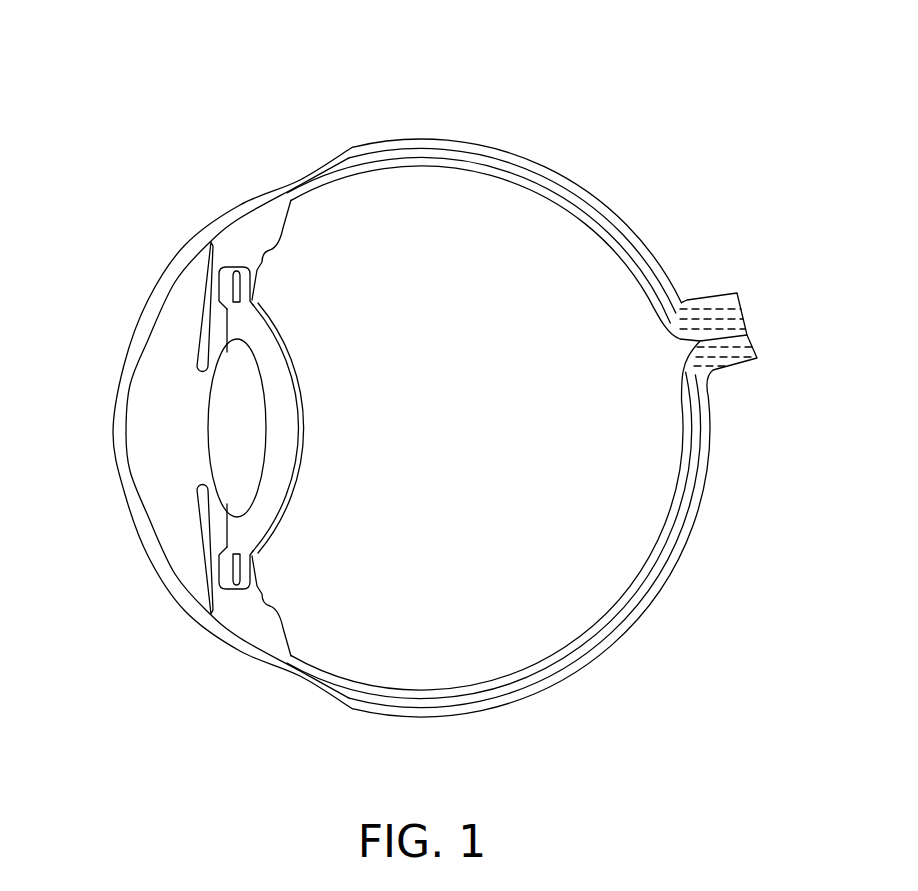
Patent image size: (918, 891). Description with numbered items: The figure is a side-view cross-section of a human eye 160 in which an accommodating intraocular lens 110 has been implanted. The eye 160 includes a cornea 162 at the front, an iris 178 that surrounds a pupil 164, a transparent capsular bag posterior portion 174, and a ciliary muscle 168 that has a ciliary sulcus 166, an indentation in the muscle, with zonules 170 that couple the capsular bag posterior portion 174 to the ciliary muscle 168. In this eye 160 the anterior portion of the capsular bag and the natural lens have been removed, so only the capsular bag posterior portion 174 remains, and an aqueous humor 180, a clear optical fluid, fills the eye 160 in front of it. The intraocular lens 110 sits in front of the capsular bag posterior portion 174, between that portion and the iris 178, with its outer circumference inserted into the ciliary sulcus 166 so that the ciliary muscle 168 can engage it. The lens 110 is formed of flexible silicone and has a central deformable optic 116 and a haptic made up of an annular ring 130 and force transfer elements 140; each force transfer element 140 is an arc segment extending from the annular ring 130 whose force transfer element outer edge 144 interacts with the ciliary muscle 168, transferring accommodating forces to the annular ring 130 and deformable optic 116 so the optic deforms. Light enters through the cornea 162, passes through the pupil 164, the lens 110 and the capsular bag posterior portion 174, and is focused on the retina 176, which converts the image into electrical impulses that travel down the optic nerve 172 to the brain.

The accommodating intraocular lens 110 is at (218, 424).
The deformable optic 116 is at (225, 442).
The annular ring 130 is at (238, 330).
The force transfer element 140 is at (237, 300).
The force transfer element outer edge 144 is at (240, 580).
The eye 160 is at (541, 80).
The cornea 162 is at (140, 313).
The pupil 164 is at (205, 476).
The ciliary sulcus 166 is at (245, 265).
The ciliary muscle 168 is at (232, 242).
The zonules 170 is at (262, 270).
The optic nerve 172 is at (715, 313).
The capsular bag posterior portion 174 is at (302, 400).
The retina 176 is at (682, 463).
The iris 178 is at (213, 292).
The aqueous humor 180 is at (143, 453).